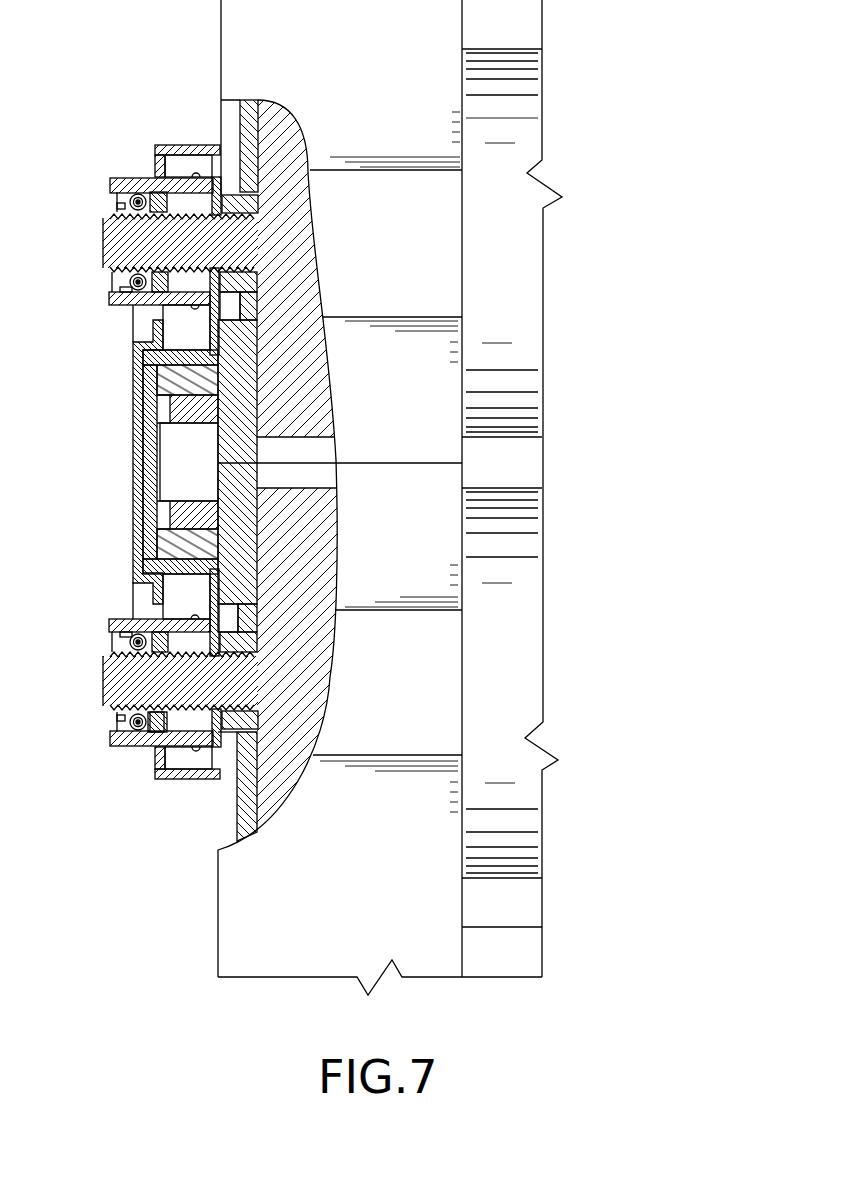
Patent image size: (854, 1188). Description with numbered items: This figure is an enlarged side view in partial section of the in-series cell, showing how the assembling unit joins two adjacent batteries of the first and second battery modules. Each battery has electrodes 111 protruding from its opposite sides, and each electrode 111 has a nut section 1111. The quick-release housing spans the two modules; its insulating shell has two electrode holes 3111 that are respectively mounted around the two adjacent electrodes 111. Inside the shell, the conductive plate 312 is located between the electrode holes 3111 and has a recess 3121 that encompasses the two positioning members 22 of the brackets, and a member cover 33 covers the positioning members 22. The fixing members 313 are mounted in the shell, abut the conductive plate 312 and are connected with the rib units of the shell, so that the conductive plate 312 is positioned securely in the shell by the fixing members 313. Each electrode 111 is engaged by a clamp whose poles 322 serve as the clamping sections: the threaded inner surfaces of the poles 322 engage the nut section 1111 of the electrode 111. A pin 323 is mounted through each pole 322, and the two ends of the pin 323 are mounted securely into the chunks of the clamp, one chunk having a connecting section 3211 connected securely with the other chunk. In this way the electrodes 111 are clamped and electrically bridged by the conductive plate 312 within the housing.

The electrode 111 is at (130, 253).
The nut section 1111 is at (253, 205).
The positioning member 22 is at (178, 463).
The member cover 33 is at (185, 412).
The conductive plate 312 is at (216, 174).
The electrode hole 3111 is at (155, 177).
The recess 3121 is at (158, 407).
The fixing member 313 is at (167, 370).
The pole 322 is at (86, 170).
The pin 323 is at (131, 203).
The connecting section 3211 is at (157, 730).